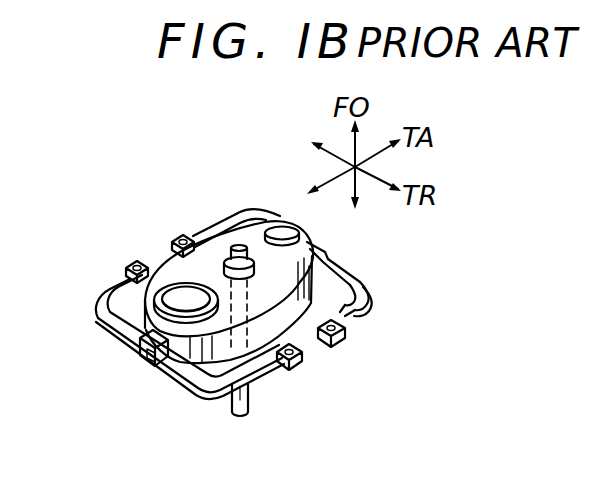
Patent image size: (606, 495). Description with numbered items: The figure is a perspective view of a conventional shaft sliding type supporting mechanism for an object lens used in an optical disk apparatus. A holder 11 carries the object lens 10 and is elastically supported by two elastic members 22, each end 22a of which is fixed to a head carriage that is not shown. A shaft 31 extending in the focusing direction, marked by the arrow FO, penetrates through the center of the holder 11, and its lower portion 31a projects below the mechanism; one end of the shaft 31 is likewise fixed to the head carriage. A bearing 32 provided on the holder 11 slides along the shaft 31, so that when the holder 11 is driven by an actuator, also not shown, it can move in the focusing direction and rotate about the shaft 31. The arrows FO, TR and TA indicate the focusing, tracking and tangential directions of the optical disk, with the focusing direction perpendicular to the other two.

The object lens 10 is at (177, 287).
The holder 11 is at (145, 318).
The elastic member 22 is at (128, 348).
The end of elastic member 22a is at (182, 234).
The shaft 31 is at (239, 245).
The lower end of pin shaft 31a is at (249, 408).
The bearing 32 is at (366, 314).